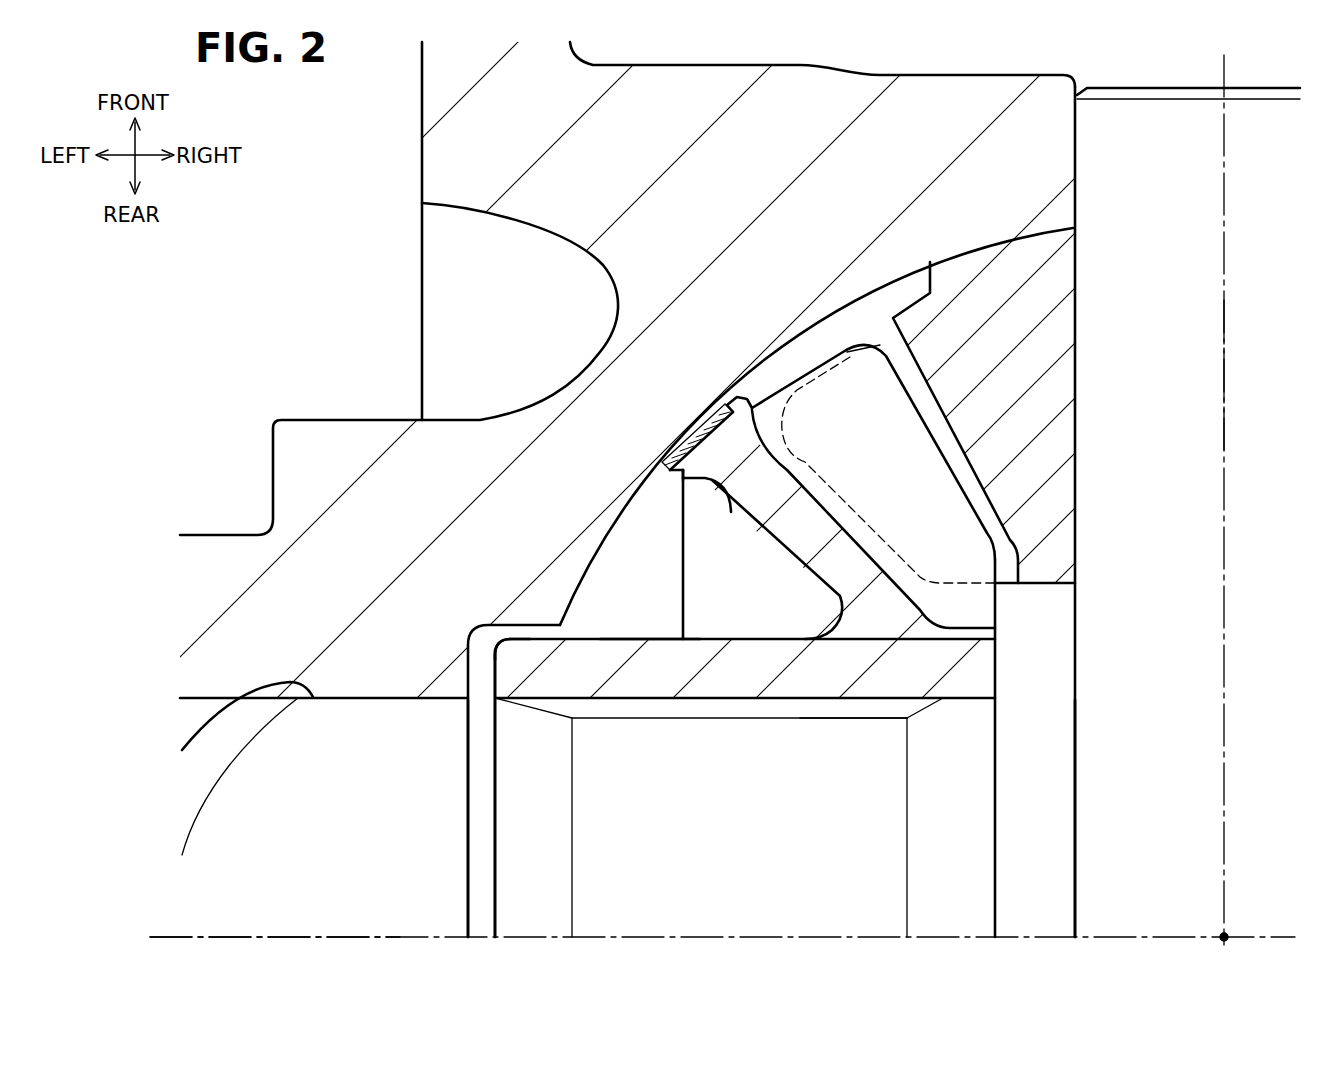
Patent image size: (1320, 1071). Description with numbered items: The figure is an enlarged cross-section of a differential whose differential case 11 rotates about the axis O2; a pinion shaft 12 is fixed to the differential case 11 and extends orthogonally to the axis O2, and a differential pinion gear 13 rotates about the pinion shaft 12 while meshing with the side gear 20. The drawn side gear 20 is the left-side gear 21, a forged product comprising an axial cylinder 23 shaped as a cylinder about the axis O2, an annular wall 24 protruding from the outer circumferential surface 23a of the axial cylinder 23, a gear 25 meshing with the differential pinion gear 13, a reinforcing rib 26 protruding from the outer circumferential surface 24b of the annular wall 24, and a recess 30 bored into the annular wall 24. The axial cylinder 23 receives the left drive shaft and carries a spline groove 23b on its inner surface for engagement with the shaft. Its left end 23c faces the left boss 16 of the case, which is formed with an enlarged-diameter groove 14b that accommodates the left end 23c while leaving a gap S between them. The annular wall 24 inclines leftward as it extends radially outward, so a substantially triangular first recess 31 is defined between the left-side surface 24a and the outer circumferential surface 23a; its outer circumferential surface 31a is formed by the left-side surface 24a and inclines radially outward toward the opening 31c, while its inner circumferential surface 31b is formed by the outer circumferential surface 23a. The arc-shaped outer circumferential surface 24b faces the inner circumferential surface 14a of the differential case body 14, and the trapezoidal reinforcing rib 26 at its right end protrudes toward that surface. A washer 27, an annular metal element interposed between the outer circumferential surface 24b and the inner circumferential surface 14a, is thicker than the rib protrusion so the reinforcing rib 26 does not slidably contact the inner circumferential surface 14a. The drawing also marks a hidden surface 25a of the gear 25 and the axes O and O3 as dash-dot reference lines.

The differential case 11 is at (1060, 165).
The pinion shaft 12 is at (1093, 793).
The differential pinion gear 13 is at (1060, 325).
The differential case body 14 is at (767, 187).
The inner circumferential surface 14a is at (817, 318).
The enlarged-diameter groove 14b is at (522, 626).
The left boss 16 is at (364, 663).
The side gear 20 is at (1088, 639).
The left-side gear 21 is at (1002, 657).
The axial cylinder 23 is at (727, 670).
The outer circumferential surface 23a is at (634, 646).
The spline groove 23b is at (855, 714).
The left end 23c is at (512, 668).
The annular wall 24 is at (780, 482).
The left-side surface 24a is at (673, 470).
The outer circumferential surface 24b is at (688, 456).
The gear 25 is at (880, 350).
The inner surface of cylindrical portion 25a is at (888, 385).
The reinforcing rib 26 is at (718, 400).
The washer 27 is at (700, 422).
The recess 30 is at (758, 602).
The first recess 31 is at (662, 586).
The outer circumferential surface 31a is at (624, 463).
The inner circumferential surface 31b is at (774, 646).
The opening 31c is at (681, 550).
The gap S is at (483, 695).
The center axis O is at (1222, 935).
The axis O2 is at (272, 937).
The third axis O3 is at (1224, 373).